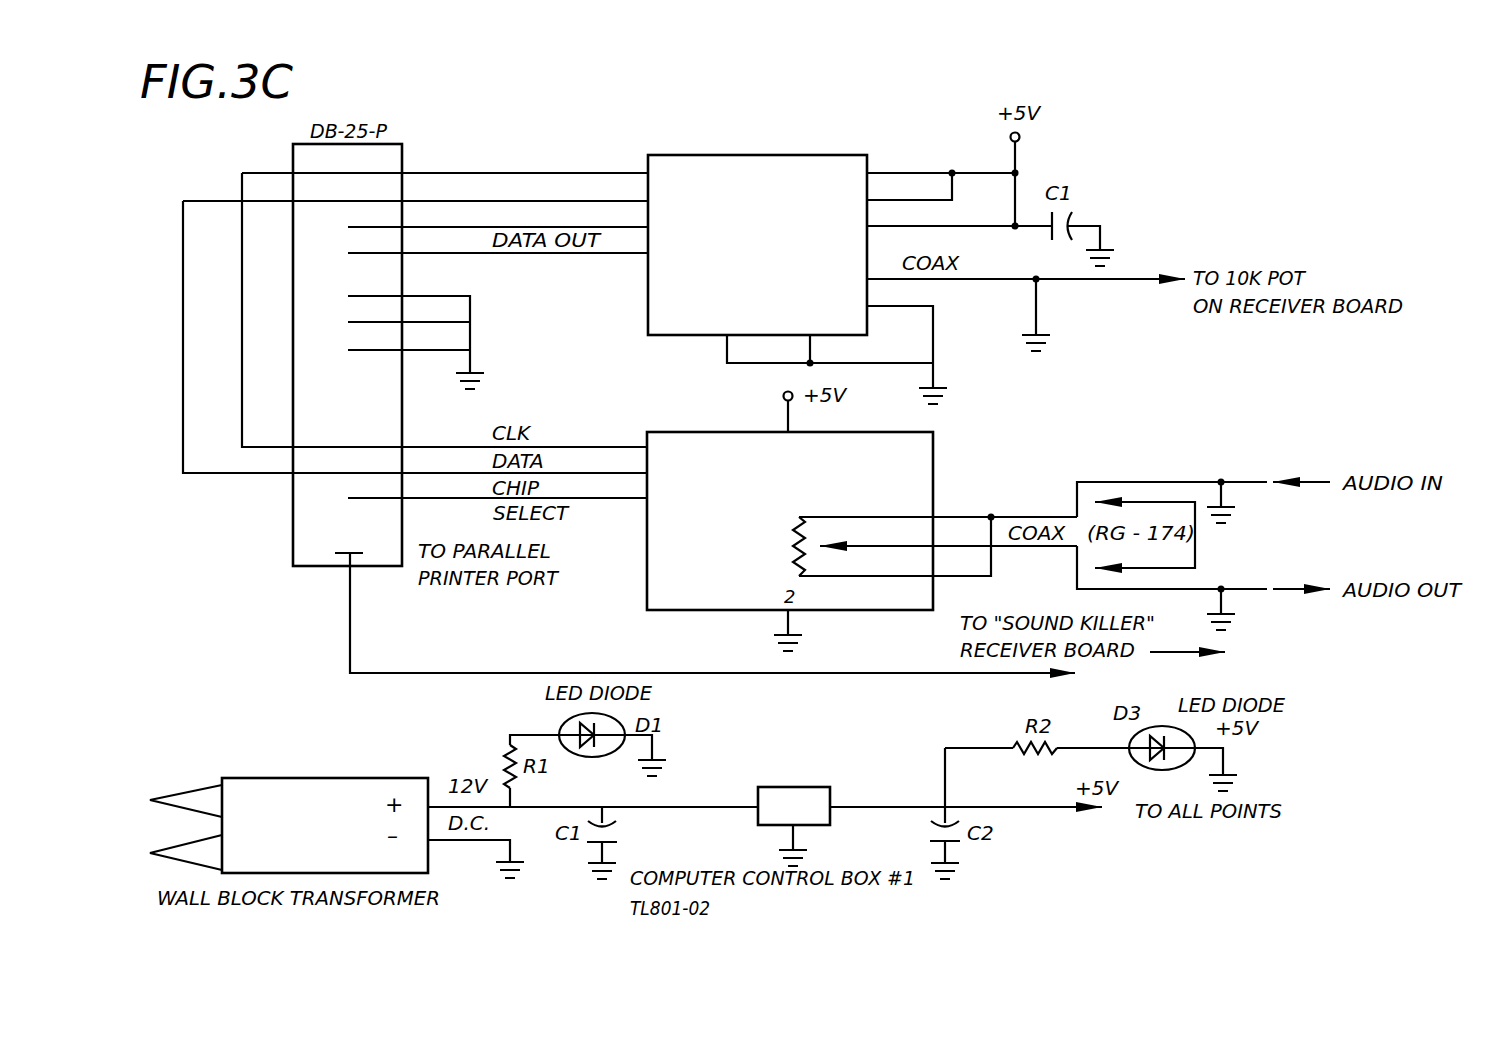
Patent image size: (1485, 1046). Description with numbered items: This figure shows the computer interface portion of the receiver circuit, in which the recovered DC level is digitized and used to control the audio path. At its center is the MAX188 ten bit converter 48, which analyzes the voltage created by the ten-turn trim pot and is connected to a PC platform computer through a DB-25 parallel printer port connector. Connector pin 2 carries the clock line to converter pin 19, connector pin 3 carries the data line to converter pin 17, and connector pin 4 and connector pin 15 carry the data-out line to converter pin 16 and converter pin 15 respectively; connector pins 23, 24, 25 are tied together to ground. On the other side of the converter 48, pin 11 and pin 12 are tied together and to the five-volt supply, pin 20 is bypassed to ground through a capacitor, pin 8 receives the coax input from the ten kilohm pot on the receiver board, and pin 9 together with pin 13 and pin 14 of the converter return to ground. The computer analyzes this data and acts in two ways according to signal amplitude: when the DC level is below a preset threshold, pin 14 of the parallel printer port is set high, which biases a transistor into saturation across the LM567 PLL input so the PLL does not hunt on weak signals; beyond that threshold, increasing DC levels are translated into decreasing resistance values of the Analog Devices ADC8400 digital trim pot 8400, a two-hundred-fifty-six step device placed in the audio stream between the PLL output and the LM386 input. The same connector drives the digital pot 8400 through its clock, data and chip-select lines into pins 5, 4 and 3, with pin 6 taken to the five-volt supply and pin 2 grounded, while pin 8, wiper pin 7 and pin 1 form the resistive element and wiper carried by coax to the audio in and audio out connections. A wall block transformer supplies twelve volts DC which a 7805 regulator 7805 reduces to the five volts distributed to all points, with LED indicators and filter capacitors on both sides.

The MAX188 ten bit converter 48 is at (683, 297).
The ADC8400 256 step digital trim pot 8400 is at (790, 521).
The 7805 voltage regulator 7805 is at (794, 826).
The DB-25 connector pin 2 (CLK) 2 is at (445, 299).
The DB-25 connector pin 3 (DATA) 3 is at (424, 343).
The DB-25 connector pin 4 is at (494, 348).
The DB-25 connector pin 5 (chip select) 5 is at (493, 469).
The pin 14 of the parallel printer port 14 is at (705, 494).
The DB-25 connector pin 15 (data out) 15 is at (483, 246).
The DB-25 connector pin 23 (ground) 23 is at (394, 351).
The DB-25 connector pin 24 (ground) 24 is at (394, 321).
The DB-25 connector pin 25 (ground) 25 is at (401, 337).
The MAX-188 pin 19 CLK 19 is at (604, 162).
The MAX-188 pin 17 DATA 17 is at (604, 188).
The MAX-188 pin 16 CO 16 is at (604, 214).
The MAX-188 pin 11 is at (929, 175).
The MAX-188 pin 12 is at (896, 192).
The MAX-188 pin 20 is at (946, 226).
The MAX-188 pin 8 coax output 8 is at (992, 395).
The MAX-188 pin 9 is at (898, 350).
The MAX-188 pin 13 is at (825, 337).
The ADC 8400 pin 6 (+5V) 6 is at (790, 424).
The ADC 8400 pin 7 wiper 7 is at (948, 537).
The ADC 8400 pin 1 is at (892, 546).